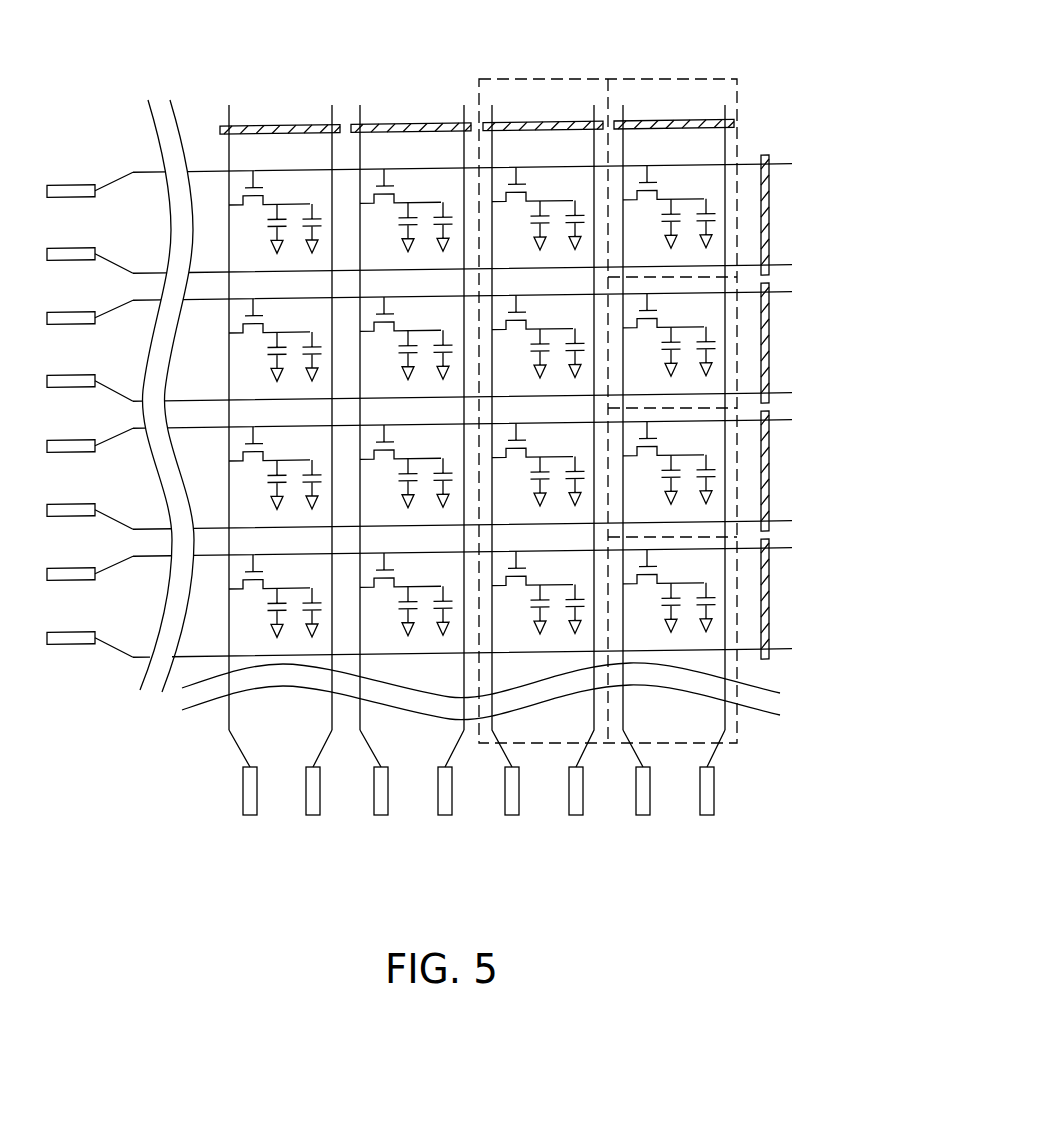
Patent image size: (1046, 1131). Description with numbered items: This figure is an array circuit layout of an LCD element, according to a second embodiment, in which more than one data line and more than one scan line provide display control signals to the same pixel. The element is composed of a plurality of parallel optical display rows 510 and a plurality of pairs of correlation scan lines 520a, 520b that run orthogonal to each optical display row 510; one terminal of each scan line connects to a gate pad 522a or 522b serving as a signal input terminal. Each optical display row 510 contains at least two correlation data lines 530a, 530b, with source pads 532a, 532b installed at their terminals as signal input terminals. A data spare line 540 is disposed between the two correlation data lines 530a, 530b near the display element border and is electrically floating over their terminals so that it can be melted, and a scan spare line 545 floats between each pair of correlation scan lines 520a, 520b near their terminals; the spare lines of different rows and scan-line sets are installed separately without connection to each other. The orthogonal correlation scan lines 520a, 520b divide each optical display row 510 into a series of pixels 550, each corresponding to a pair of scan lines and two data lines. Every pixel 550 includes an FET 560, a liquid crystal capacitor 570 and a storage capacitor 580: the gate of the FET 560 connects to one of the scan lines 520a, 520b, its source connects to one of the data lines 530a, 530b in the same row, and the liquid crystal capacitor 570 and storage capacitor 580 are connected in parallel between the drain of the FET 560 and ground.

The optical display row 510 is at (657, 79).
The data spare line 540 is at (520, 125).
The correlation scan line 520a is at (780, 163).
The correlation scan line 520b is at (782, 264).
The gate pad 522a is at (73, 185).
The gate pad 522b is at (73, 247).
The scan spare line 545 is at (765, 607).
The pixel 550 is at (720, 247).
The FET 560 is at (645, 452).
The liquid crystal capacitor 570 is at (683, 478).
The storage capacitor 580 is at (720, 473).
The correlation data line 530a is at (502, 750).
The correlation data line 530b is at (587, 750).
The source pad 532a is at (512, 817).
The source pad 532b is at (575, 815).